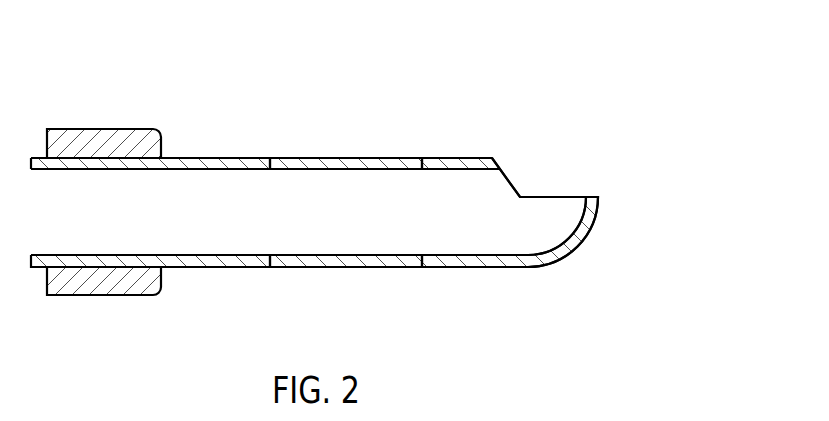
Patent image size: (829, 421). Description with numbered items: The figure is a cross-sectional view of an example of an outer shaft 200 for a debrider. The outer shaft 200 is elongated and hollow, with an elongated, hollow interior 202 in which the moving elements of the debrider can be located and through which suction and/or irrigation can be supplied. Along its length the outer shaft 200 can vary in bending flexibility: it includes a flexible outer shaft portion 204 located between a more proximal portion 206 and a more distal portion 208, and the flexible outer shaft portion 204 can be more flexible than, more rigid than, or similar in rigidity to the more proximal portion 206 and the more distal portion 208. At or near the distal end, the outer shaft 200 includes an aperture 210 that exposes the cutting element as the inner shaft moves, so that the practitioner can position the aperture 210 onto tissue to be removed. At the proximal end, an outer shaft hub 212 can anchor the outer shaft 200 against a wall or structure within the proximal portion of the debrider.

The outer shaft 200 is at (565, 52).
The hollow interior 202 is at (283, 227).
The flexible outer shaft portion 204 is at (343, 158).
The more proximal portion 206 is at (215, 158).
The more distal portion 208 is at (457, 158).
The aperture 210 is at (535, 182).
The outer shaft hub 212 is at (98, 129).